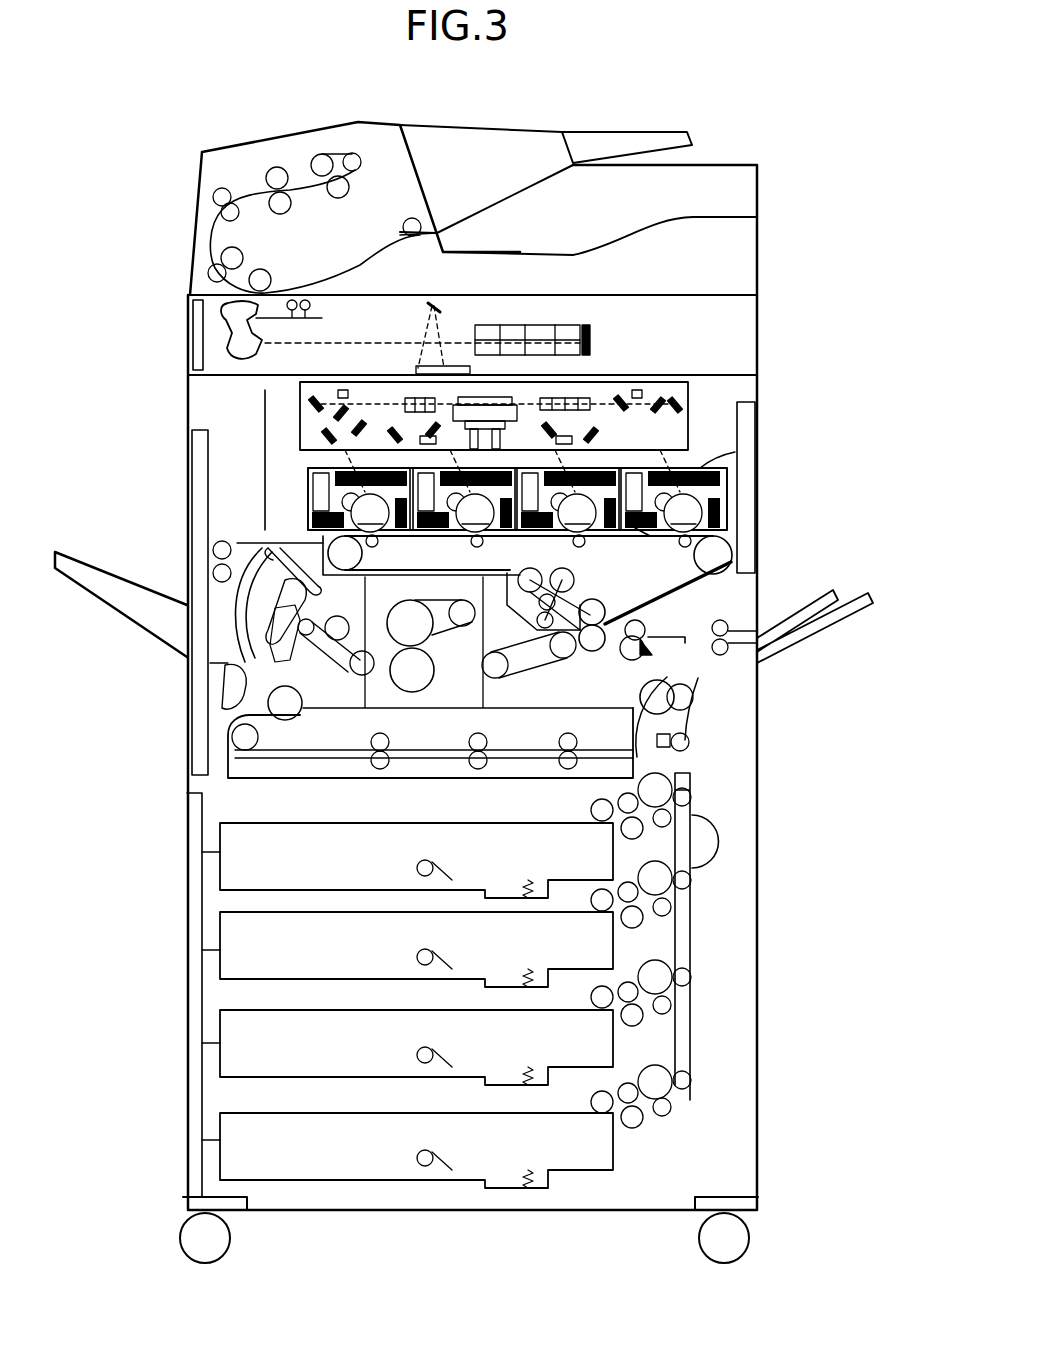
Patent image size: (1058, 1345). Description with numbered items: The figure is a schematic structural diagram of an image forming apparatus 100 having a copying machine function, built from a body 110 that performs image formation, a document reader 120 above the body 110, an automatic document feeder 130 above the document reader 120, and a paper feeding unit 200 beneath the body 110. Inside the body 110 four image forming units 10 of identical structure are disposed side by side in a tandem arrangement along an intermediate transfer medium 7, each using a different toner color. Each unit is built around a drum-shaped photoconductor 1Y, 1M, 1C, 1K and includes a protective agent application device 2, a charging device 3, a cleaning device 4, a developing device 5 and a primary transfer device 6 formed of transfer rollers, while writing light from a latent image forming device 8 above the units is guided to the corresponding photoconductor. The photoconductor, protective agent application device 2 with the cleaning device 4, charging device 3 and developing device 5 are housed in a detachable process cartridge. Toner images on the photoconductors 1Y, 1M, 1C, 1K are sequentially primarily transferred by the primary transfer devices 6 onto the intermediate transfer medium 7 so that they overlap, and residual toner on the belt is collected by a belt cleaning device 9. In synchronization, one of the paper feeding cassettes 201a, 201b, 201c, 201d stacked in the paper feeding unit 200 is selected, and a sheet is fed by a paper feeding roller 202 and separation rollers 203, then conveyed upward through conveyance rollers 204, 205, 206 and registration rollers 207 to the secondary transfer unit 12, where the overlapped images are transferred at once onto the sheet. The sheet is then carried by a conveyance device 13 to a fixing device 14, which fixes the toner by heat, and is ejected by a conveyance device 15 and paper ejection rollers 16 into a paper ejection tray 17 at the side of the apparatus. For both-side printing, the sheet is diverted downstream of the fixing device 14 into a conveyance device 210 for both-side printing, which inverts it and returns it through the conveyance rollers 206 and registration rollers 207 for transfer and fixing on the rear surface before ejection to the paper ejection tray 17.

The image forming apparatus 100 is at (137, 143).
The automatic document feeder 130 is at (198, 238).
The document reader 120 is at (215, 347).
The body 110 is at (222, 475).
The image forming unit 10 is at (305, 480).
The latent image forming device 8 is at (703, 395).
The charging device 3 is at (700, 468).
The protective agent application device 2 is at (706, 512).
The cleaning device 4 is at (704, 518).
The photoconductor 1Y is at (359, 500).
The photoconductor 1M is at (464, 500).
The photoconductor 1C is at (568, 500).
The photoconductor 1K is at (674, 500).
The primary transfer device 6 is at (378, 544).
The developing device 5 is at (646, 537).
The intermediate transfer medium 7 is at (664, 593).
The belt cleaning device 9 is at (531, 626).
The secondary transfer roller 12 is at (591, 652).
The conveyance device 13 is at (523, 672).
The fixing device 14 is at (387, 611).
The conveyance device 15 is at (330, 663).
The paper ejection rollers 16 is at (228, 541).
The paper ejection tray 17 is at (137, 585).
The registration rollers 207 is at (627, 657).
The conveyance rollers 206 is at (690, 703).
The conveyance rollers 205 is at (690, 745).
The conveyance rollers 204 is at (690, 805).
The conveyance device for both-side printing 210 is at (383, 790).
The paper feeding unit 200 is at (187, 970).
The paper feeding cassette 201a is at (325, 869).
The paper feeding cassette 201b is at (325, 959).
The paper feeding cassette 201c is at (325, 1057).
The paper feeding cassette 201d is at (325, 1161).
The paper feeding roller 202 is at (598, 1100).
The separation rollers 203 is at (634, 1127).